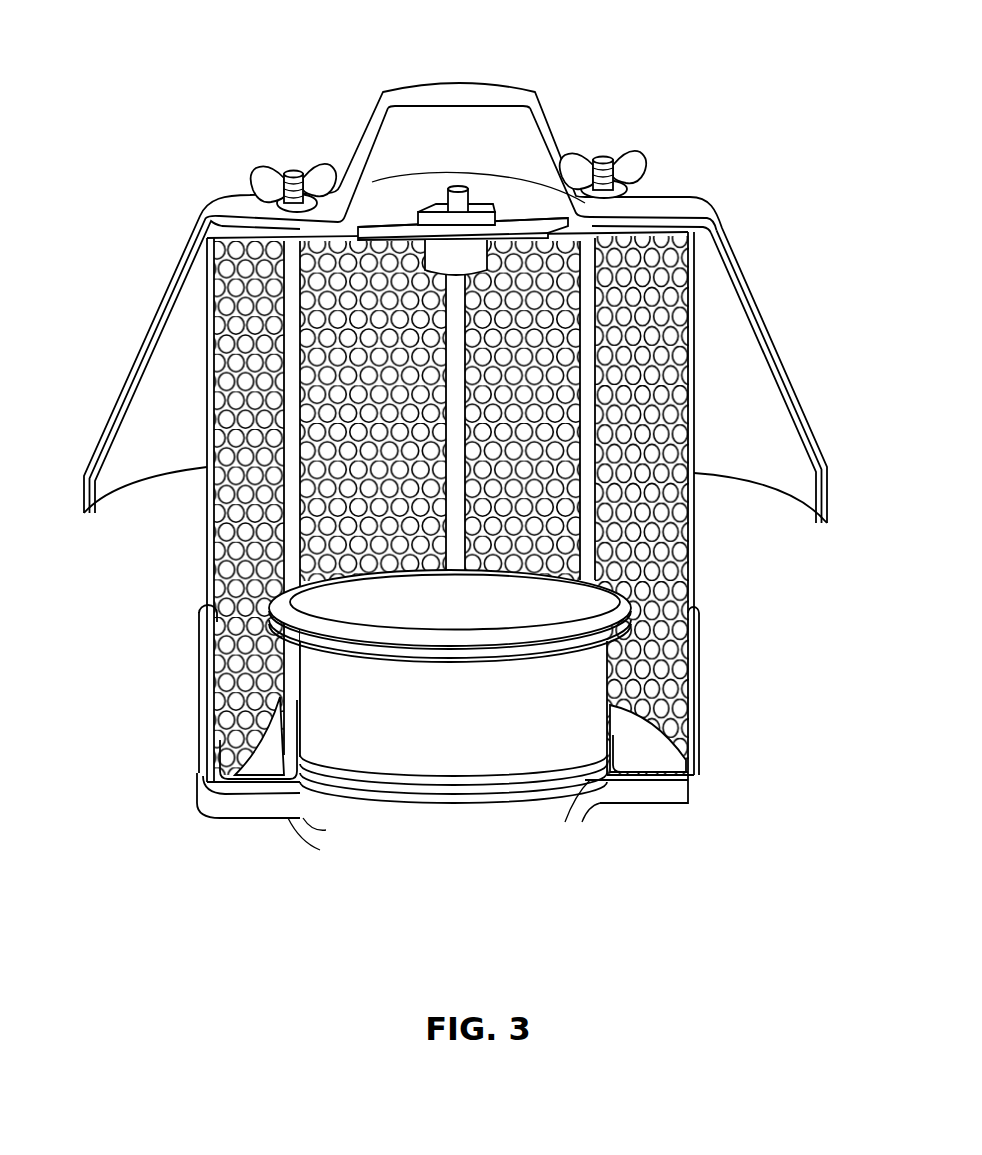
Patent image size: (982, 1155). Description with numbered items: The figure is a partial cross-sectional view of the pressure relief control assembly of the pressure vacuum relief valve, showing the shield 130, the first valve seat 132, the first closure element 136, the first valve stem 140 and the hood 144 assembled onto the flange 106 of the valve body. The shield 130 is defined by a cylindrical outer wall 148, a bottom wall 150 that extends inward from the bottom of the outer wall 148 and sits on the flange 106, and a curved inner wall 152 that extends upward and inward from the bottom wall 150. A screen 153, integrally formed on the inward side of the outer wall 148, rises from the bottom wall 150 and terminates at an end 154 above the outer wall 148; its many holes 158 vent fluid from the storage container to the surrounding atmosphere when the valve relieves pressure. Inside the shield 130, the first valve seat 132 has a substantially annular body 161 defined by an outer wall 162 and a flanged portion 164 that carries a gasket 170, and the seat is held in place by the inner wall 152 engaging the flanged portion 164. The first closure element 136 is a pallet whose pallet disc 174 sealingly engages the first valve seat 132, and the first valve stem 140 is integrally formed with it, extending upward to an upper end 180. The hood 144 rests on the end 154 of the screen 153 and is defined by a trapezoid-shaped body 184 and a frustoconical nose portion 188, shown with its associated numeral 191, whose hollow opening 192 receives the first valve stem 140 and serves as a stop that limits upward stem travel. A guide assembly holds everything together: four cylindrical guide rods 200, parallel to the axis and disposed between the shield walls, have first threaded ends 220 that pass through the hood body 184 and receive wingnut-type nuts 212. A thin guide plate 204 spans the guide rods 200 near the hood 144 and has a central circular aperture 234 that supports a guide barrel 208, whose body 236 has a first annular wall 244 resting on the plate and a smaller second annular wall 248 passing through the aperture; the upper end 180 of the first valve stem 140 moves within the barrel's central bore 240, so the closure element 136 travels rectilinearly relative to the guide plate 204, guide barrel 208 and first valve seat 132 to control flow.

The flange 106 is at (257, 807).
The shield 130 is at (712, 733).
The first valve seat 132 is at (541, 758).
The first closure element 136 is at (541, 616).
The first valve stem 140 is at (449, 544).
The hood 144 is at (455, 279).
The outer wall 148 is at (211, 705).
The bottom wall 150 is at (252, 768).
The inner wall 152 is at (283, 750).
The screen 153 is at (218, 610).
The end 154 is at (675, 230).
The holes 158 is at (647, 553).
The body 161 is at (541, 758).
The outer wall 162 is at (568, 732).
The flanged portion 164 is at (534, 781).
The gasket 170 is at (411, 796).
The pallet disc 174 is at (533, 605).
The upper end 180 is at (467, 207).
The body 184 is at (640, 207).
The nose portion 188 is at (304, 134).
The hood left slope panel 191 is at (368, 140).
The opening 192 is at (429, 112).
The guide rods 200 is at (292, 422).
The guide plate 204 is at (479, 125).
The guide barrel 208 is at (628, 291).
The nuts 212 is at (440, 136).
The first threaded end 220 is at (293, 172).
The circular aperture 234 is at (409, 222).
The body 236 is at (628, 291).
The central bore 240 is at (454, 186).
The first annular wall 244 is at (507, 222).
The second annular wall 248 is at (462, 267).